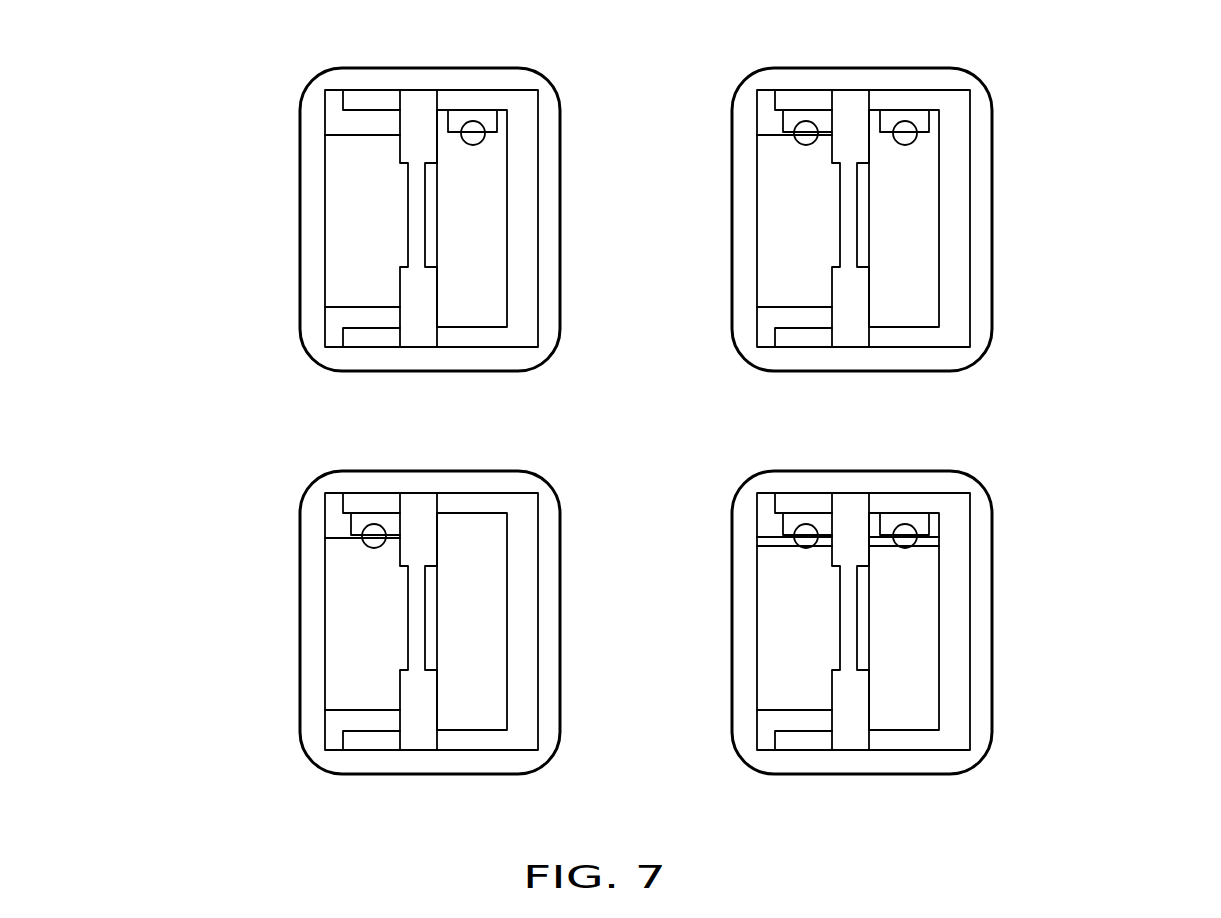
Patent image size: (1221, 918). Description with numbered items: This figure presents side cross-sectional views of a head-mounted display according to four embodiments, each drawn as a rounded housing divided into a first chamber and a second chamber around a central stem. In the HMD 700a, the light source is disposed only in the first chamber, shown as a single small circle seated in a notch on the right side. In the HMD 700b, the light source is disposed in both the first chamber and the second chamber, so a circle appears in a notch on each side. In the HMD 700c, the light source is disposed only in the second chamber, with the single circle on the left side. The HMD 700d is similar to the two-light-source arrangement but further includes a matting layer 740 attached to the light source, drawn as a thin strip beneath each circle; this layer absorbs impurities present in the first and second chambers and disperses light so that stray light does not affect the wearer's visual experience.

The HMD 700a is at (258, 203).
The HMD 700b is at (1047, 203).
The HMD 700c is at (257, 643).
The HMD 700d is at (1047, 646).
The matting layer 740 is at (823, 540).